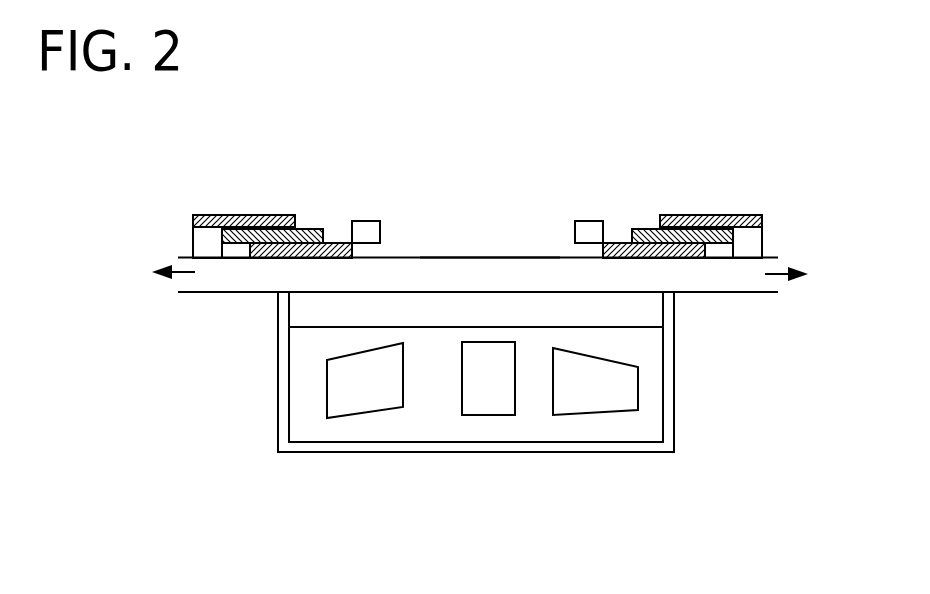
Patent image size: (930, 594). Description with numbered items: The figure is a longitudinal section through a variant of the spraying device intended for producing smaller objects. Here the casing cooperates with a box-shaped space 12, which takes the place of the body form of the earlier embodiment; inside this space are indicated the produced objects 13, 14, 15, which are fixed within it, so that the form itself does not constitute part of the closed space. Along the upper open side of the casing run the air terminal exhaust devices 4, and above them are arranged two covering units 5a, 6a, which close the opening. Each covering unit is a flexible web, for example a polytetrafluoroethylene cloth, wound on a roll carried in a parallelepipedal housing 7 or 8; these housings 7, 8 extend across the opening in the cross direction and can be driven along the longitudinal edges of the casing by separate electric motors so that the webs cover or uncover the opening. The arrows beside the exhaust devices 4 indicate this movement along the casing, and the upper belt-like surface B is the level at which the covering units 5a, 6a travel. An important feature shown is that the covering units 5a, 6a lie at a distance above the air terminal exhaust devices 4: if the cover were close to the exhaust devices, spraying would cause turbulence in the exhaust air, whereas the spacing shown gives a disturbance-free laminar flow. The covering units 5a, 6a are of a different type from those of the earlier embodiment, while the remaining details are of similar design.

The air terminal exhaust devices 4 is at (180, 257).
The covering unit 5a is at (305, 229).
The covering unit 6a is at (636, 232).
The housing 7 is at (372, 232).
The housing 8 is at (582, 232).
The belt surface B is at (490, 248).
The box-shaped space 12 is at (670, 400).
The object 13 is at (368, 398).
The object 14 is at (490, 400).
The object 15 is at (600, 402).